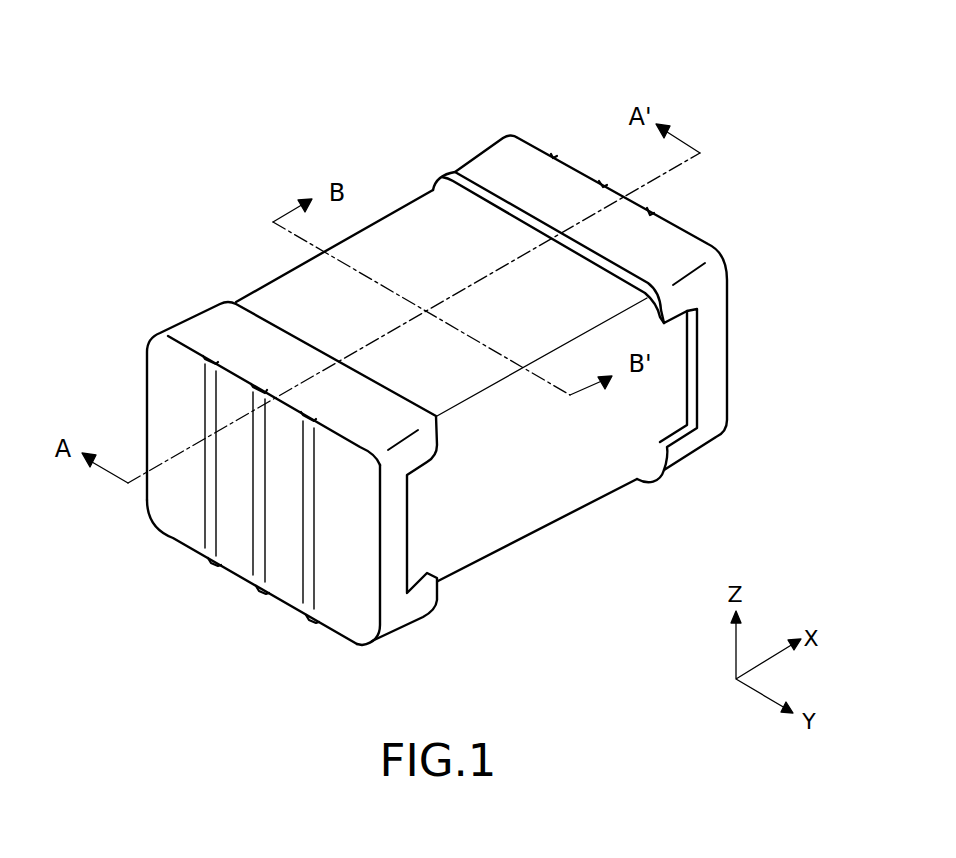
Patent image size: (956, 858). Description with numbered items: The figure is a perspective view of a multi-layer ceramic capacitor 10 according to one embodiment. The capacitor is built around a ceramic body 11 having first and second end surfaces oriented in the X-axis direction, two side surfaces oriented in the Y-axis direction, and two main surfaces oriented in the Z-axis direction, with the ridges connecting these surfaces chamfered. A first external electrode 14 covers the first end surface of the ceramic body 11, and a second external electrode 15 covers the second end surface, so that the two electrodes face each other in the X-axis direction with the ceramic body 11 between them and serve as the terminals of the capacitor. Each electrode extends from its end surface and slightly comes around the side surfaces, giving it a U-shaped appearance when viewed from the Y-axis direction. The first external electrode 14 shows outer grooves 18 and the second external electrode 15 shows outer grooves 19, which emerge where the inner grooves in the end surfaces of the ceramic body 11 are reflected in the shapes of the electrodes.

The multi-layer ceramic capacitor 10 is at (449, 362).
The ceramic body 11 is at (400, 232).
The first external electrode 14 is at (292, 475).
The second external electrode 15 is at (592, 270).
The outer grooves 18 is at (308, 595).
The outer grooves 19 is at (652, 212).